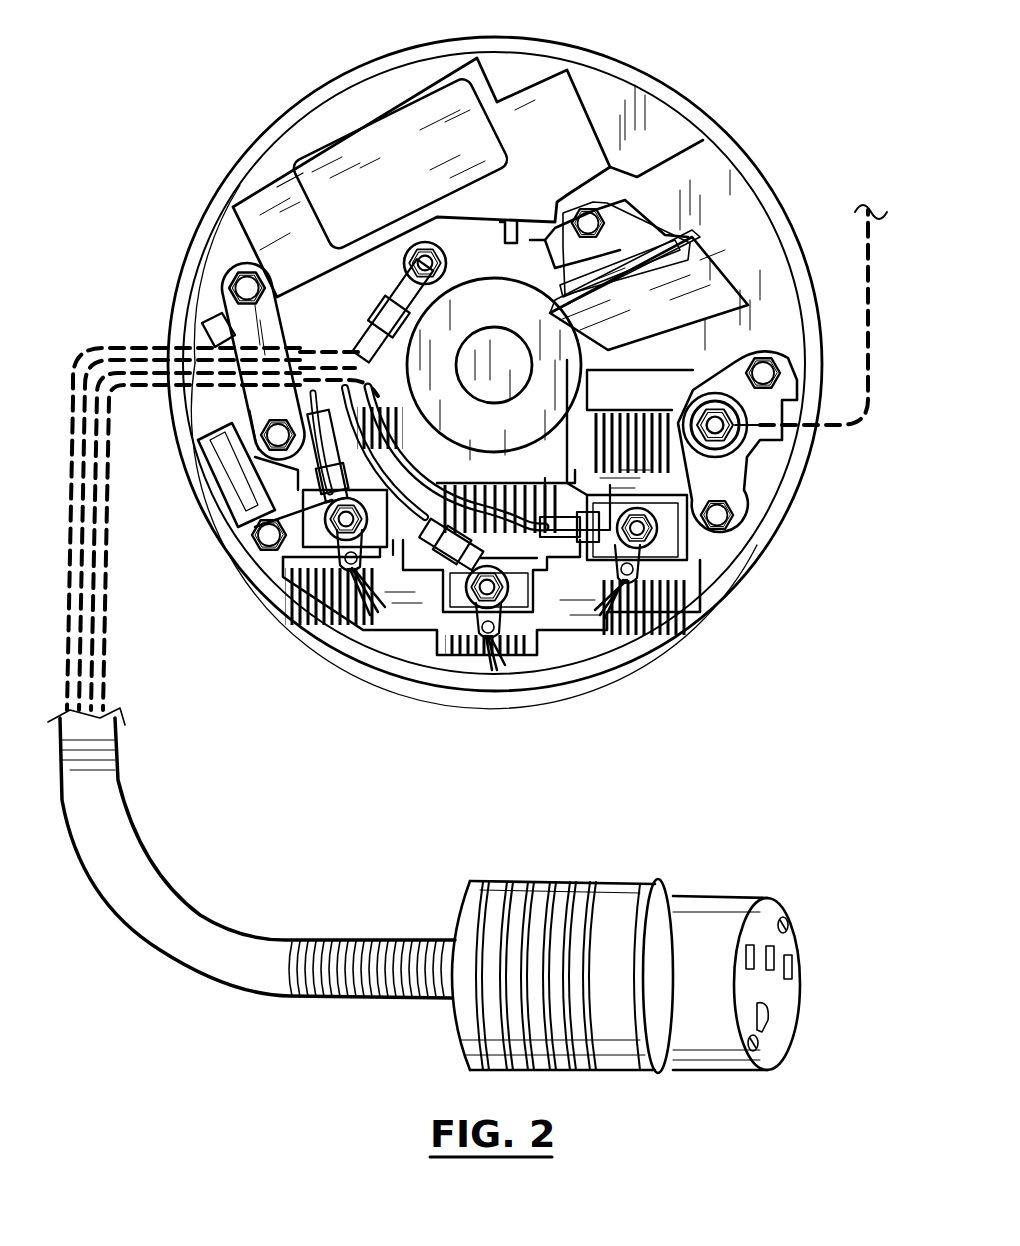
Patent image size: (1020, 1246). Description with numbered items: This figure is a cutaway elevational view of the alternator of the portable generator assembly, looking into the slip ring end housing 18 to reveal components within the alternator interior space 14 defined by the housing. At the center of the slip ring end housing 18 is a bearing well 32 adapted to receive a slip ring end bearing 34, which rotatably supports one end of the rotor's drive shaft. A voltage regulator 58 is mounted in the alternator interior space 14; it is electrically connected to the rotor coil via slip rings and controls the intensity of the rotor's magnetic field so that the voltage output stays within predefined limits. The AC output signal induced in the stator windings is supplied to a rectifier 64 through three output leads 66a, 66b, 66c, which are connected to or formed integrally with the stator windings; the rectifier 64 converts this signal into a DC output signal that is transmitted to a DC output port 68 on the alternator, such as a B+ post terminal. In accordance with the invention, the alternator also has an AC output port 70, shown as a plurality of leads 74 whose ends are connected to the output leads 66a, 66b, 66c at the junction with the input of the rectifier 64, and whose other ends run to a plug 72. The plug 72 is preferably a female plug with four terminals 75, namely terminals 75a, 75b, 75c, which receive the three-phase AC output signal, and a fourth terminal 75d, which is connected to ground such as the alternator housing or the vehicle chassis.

The alternator interior space 14 is at (747, 233).
The slip ring end housing 18 is at (672, 92).
The bearing well 32 is at (457, 448).
The slip ring end bearing 34 is at (450, 400).
The voltage regulator 58 is at (277, 187).
The rectifier 64 is at (570, 637).
The output lead 66a is at (363, 607).
The output lead 66b is at (487, 663).
The output lead 66c is at (617, 577).
The DC output port 68 is at (713, 448).
The AC output port 70 is at (118, 606).
The plug 72 is at (665, 961).
The leads 74 is at (142, 842).
The terminals 75 is at (410, 253).
The terminal 75a is at (753, 940).
The terminal 75b is at (769, 944).
The terminal 75c is at (792, 973).
The fourth terminal 75d is at (769, 1018).